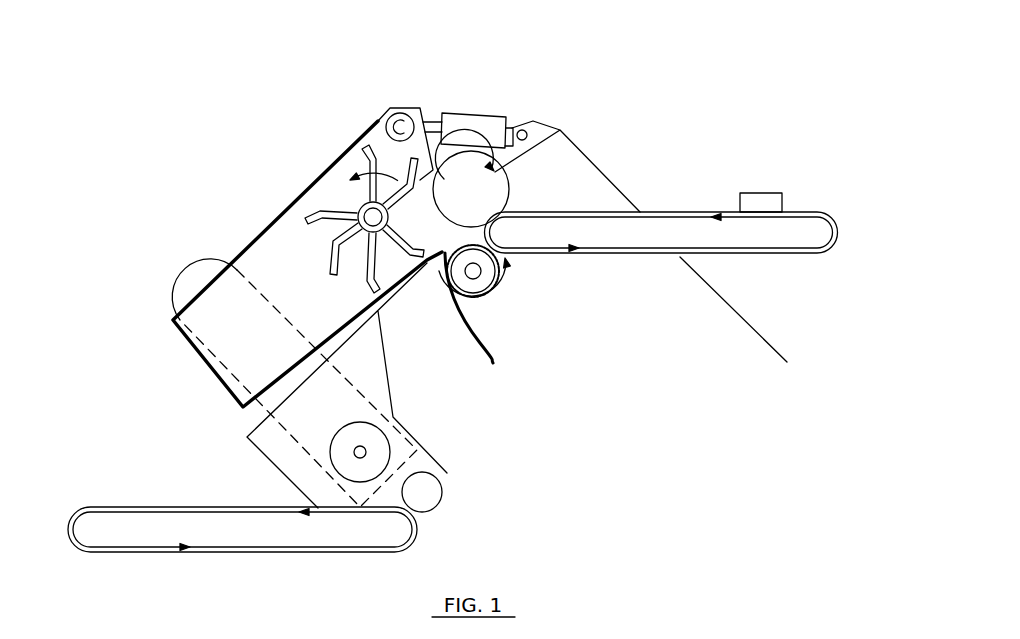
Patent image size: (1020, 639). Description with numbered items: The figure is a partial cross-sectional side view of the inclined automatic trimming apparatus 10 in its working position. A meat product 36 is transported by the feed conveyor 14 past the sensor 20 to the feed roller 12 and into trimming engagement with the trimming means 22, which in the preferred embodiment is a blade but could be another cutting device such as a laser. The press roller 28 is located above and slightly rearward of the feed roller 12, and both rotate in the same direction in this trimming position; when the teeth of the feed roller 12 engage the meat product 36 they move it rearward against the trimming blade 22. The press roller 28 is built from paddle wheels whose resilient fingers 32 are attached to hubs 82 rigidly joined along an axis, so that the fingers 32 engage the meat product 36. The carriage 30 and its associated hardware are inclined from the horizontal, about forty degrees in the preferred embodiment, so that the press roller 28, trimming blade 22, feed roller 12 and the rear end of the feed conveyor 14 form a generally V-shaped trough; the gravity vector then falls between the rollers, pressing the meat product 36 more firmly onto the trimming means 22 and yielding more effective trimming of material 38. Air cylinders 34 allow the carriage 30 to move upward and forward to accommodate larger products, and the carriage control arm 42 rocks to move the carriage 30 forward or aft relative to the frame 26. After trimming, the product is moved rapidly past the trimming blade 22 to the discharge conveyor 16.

The document feeding apparatus 10 is at (425, 78).
The feed roller 12 is at (483, 287).
The feed conveyor 14 is at (730, 247).
The discharge conveyor 16 is at (333, 547).
The sensor 20 is at (770, 197).
The trimming means 22 is at (437, 262).
The support frame 26 is at (268, 462).
The press roller 28 is at (333, 198).
The carriage 30 is at (258, 225).
The resilient fingers 32 is at (362, 148).
The air cylinders 34 is at (471, 120).
The meat product 36 is at (527, 127).
The material 38 is at (497, 362).
The carriage control arm 42 is at (262, 408).
The hubs 82 is at (342, 178).